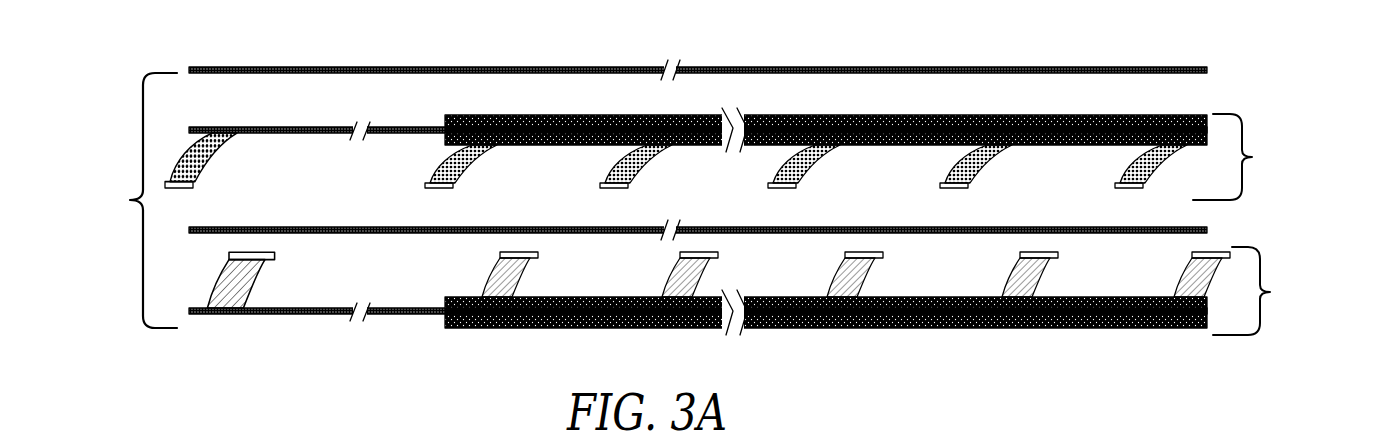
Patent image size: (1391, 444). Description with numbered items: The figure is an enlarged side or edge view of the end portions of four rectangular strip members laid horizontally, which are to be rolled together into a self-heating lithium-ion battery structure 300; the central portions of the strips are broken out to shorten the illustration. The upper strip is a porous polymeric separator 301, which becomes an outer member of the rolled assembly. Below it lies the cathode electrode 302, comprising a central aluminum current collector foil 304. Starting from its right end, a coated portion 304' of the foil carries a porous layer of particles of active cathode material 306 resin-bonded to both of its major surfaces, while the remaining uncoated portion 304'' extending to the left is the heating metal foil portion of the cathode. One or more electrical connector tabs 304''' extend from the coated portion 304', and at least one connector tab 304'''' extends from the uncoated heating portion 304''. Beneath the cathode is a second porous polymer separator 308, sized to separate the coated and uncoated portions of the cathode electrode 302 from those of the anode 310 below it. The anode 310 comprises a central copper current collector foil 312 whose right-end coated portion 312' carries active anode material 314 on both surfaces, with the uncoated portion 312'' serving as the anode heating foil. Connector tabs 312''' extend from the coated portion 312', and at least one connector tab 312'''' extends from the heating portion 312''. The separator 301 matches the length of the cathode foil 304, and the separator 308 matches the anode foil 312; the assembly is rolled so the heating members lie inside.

The self-heating lithium-ion battery structure 300 is at (130, 200).
The porous polymeric separator 301 is at (1207, 70).
The cathode electrode 302 is at (771, 154).
The cathode current collector foil 304 is at (686, 154).
The cathode material-coated portion 304' is at (698, 154).
The uncoated heating foil portion 304'' is at (363, 169).
The cathode electrical connector tabs 304''' is at (893, 175).
The cathode heating-portion connector tab 304'''' is at (238, 160).
The active cathode material 306 is at (877, 115).
The second porous polymer separator 308 is at (1207, 230).
The anode 310 is at (786, 316).
The anode current collector foil 312 is at (709, 317).
The anode material-coated portion 312' is at (734, 359).
The uncoated heating foil portion 312'' is at (365, 351).
The anode electrical connector tabs 312''' is at (856, 272).
The anode heating-portion connector tab 312'''' is at (289, 276).
The active anode material 314 is at (1068, 297).